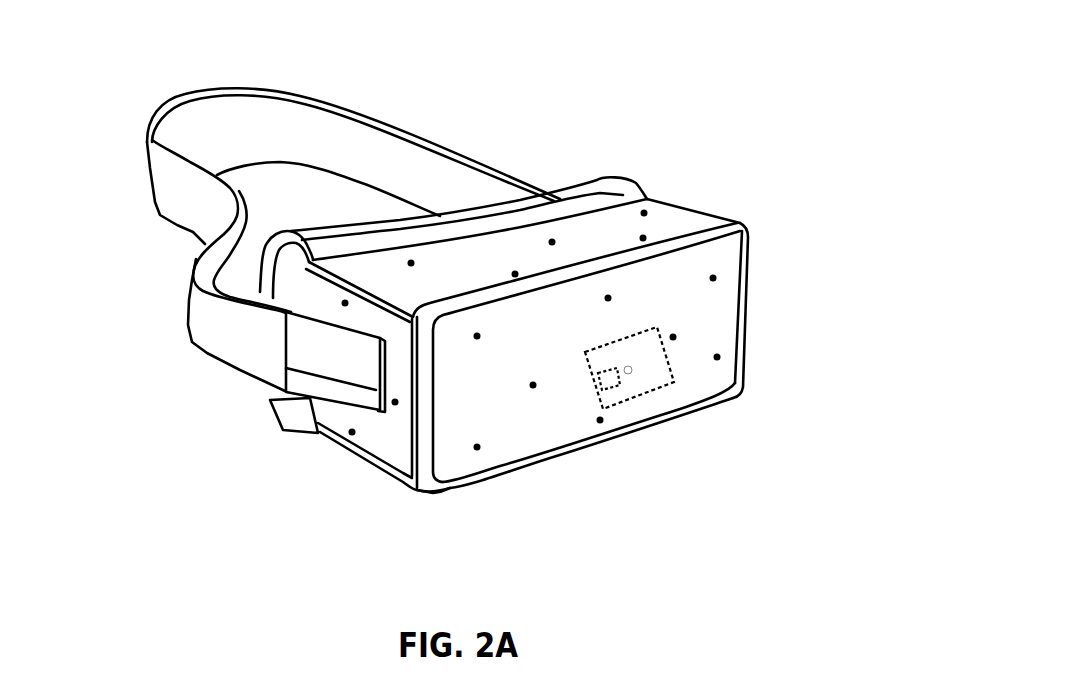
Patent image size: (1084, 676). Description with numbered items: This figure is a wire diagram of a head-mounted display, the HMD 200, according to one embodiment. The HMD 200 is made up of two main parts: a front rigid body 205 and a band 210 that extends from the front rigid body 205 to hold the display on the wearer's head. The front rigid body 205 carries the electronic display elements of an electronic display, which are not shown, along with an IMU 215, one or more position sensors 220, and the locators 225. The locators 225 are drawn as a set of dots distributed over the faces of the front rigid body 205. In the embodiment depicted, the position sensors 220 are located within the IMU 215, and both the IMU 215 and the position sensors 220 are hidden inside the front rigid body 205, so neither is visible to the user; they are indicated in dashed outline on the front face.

The HMD 200 is at (83, 91).
The front rigid body 205 is at (754, 223).
The band 210 is at (455, 148).
The IMU 215 is at (677, 380).
The position sensors 220 is at (610, 383).
The locators 225 is at (721, 356).